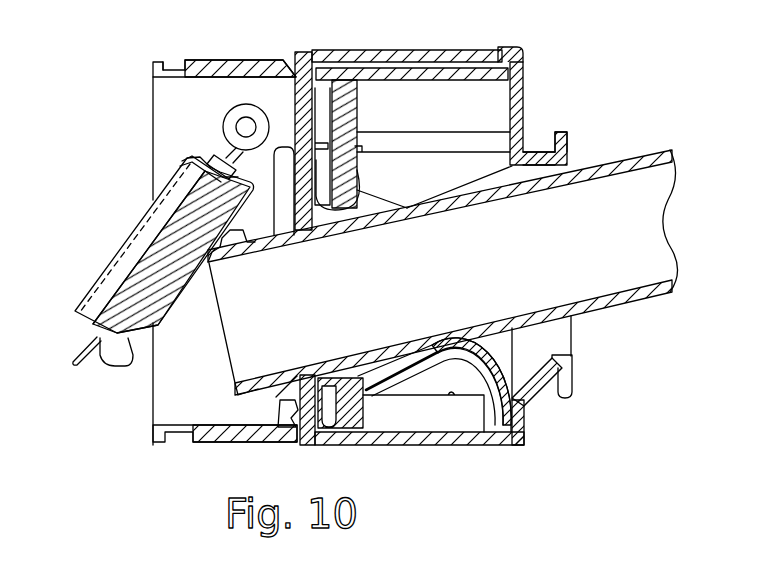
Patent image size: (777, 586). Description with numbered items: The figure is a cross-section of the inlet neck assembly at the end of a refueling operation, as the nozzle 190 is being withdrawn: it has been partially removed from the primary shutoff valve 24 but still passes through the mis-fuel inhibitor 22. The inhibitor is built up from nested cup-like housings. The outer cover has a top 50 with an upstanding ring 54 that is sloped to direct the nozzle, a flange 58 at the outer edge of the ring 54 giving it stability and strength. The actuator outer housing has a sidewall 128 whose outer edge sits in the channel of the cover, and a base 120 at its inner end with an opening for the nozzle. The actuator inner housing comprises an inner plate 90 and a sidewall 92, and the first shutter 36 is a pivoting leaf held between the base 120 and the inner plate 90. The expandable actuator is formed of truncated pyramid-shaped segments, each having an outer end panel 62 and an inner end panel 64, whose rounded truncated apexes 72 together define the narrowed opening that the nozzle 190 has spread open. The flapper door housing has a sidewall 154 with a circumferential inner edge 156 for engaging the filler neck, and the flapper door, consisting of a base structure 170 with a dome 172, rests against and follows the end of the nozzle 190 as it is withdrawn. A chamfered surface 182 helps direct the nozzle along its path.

The mis-fuel inhibitor 22 is at (400, 40).
The primary shutoff valve 24 is at (230, 48).
The first shutter 36 is at (322, 135).
The top 50 is at (524, 62).
The upstanding ring 54 is at (536, 152).
The flange 58 is at (566, 131).
The outer end panel 62 is at (483, 353).
The inner end panel 64 is at (398, 370).
The rounded truncated apex 72 is at (437, 350).
The inner plate 90 is at (350, 103).
The sidewall 92 is at (383, 70).
The base 120 is at (293, 95).
The sidewall 128 is at (445, 53).
The sidewall 154 is at (263, 66).
The circumferential inner edge 156 is at (164, 66).
The base structure 170 is at (118, 247).
The dome 172 is at (138, 335).
The chamfered surface 182 is at (278, 420).
The nozzle 190 is at (617, 150).